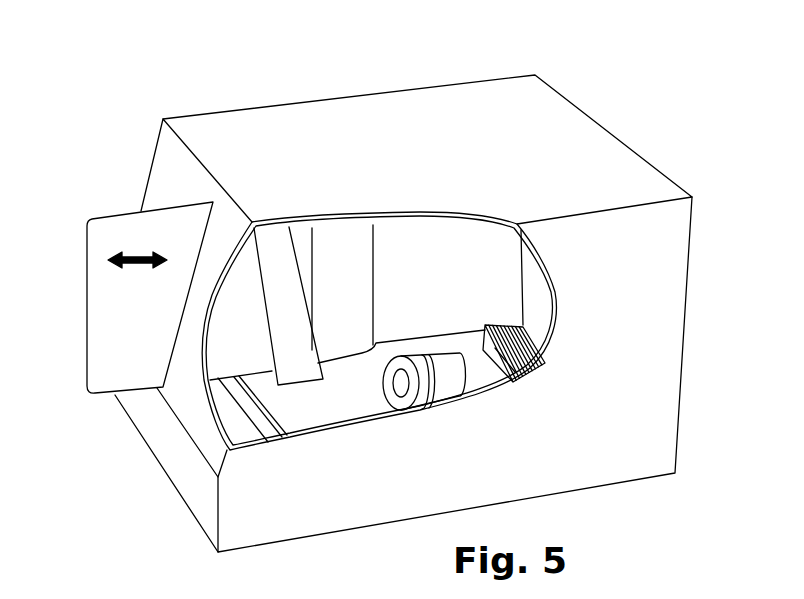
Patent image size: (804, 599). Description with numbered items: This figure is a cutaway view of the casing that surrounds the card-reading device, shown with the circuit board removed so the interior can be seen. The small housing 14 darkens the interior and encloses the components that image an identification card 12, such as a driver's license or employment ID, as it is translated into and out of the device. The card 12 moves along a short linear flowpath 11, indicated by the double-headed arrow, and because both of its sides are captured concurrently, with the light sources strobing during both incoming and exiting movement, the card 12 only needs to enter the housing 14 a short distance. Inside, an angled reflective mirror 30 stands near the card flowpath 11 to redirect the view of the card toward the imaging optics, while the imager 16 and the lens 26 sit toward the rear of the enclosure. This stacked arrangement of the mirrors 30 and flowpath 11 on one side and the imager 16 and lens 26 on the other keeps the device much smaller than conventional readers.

The linear flowpath 11 is at (137, 245).
The identification card 12 is at (113, 347).
The housing 14 is at (362, 117).
The imager 16 is at (502, 332).
The lens 26 is at (443, 375).
The angled reflective mirrors 30 is at (293, 333).